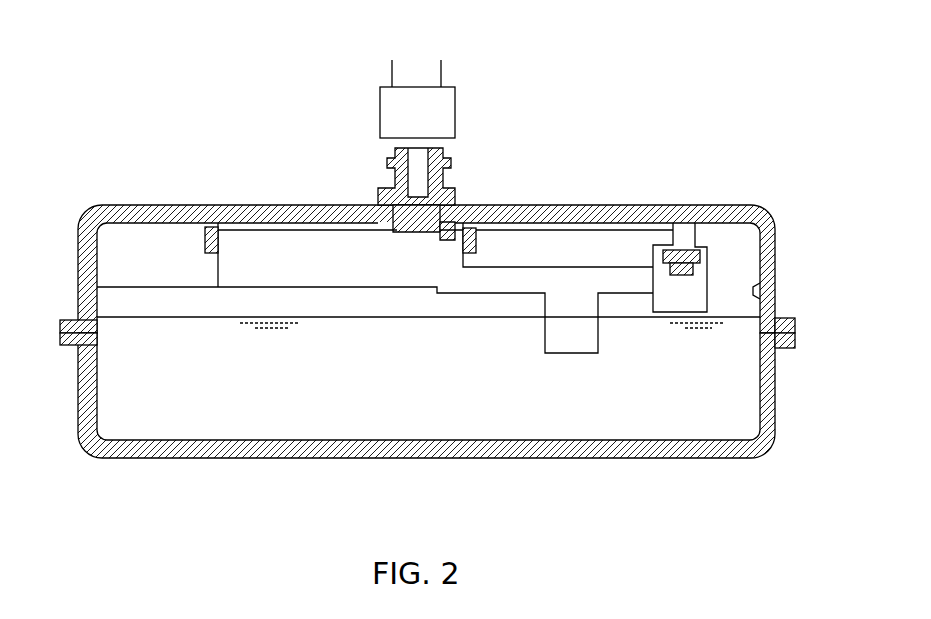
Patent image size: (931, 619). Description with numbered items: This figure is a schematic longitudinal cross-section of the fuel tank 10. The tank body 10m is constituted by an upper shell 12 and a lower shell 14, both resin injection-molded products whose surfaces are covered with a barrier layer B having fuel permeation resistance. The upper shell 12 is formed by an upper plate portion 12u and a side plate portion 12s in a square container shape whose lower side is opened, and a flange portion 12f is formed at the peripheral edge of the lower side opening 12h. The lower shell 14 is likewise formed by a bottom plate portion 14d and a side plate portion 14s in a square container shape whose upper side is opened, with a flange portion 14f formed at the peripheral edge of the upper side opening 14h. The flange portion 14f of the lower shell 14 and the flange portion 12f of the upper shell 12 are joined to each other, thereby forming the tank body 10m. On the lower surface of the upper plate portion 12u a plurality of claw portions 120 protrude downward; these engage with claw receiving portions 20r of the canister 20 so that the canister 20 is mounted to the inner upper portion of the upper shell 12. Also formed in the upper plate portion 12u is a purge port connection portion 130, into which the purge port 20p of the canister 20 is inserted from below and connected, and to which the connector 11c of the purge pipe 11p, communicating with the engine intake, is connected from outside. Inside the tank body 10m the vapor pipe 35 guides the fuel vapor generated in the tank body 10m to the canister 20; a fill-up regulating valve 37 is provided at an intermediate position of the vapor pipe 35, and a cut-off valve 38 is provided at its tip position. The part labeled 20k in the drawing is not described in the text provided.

The fuel tank 10 is at (656, 166).
The tank body 10m is at (706, 205).
The connector 11c is at (440, 100).
The purge pipe 11p is at (415, 75).
The upper shell 12 is at (596, 210).
The upper plate portion 12u is at (517, 210).
The side plate portion 12s is at (78, 258).
The lower side opening 12h is at (771, 286).
The flange portion 12f is at (62, 320).
The lower shell 14 is at (607, 458).
The bottom plate portion 14d is at (384, 452).
The side plate portion 14s is at (775, 397).
The upper side opening 14h is at (95, 445).
The flange portion 14f is at (70, 346).
The canister 20 is at (337, 290).
The purge port 20p is at (393, 180).
The fixing portion 20k is at (415, 215).
The claw receiving portion 20r is at (207, 238).
The vapor pipe 35 is at (483, 293).
The fill-up regulating valve 37 is at (572, 353).
The cut-off valve 38 is at (672, 290).
The claw portion 120 is at (203, 222).
The purge port connection portion 130 is at (376, 189).
The barrier layer B is at (763, 217).